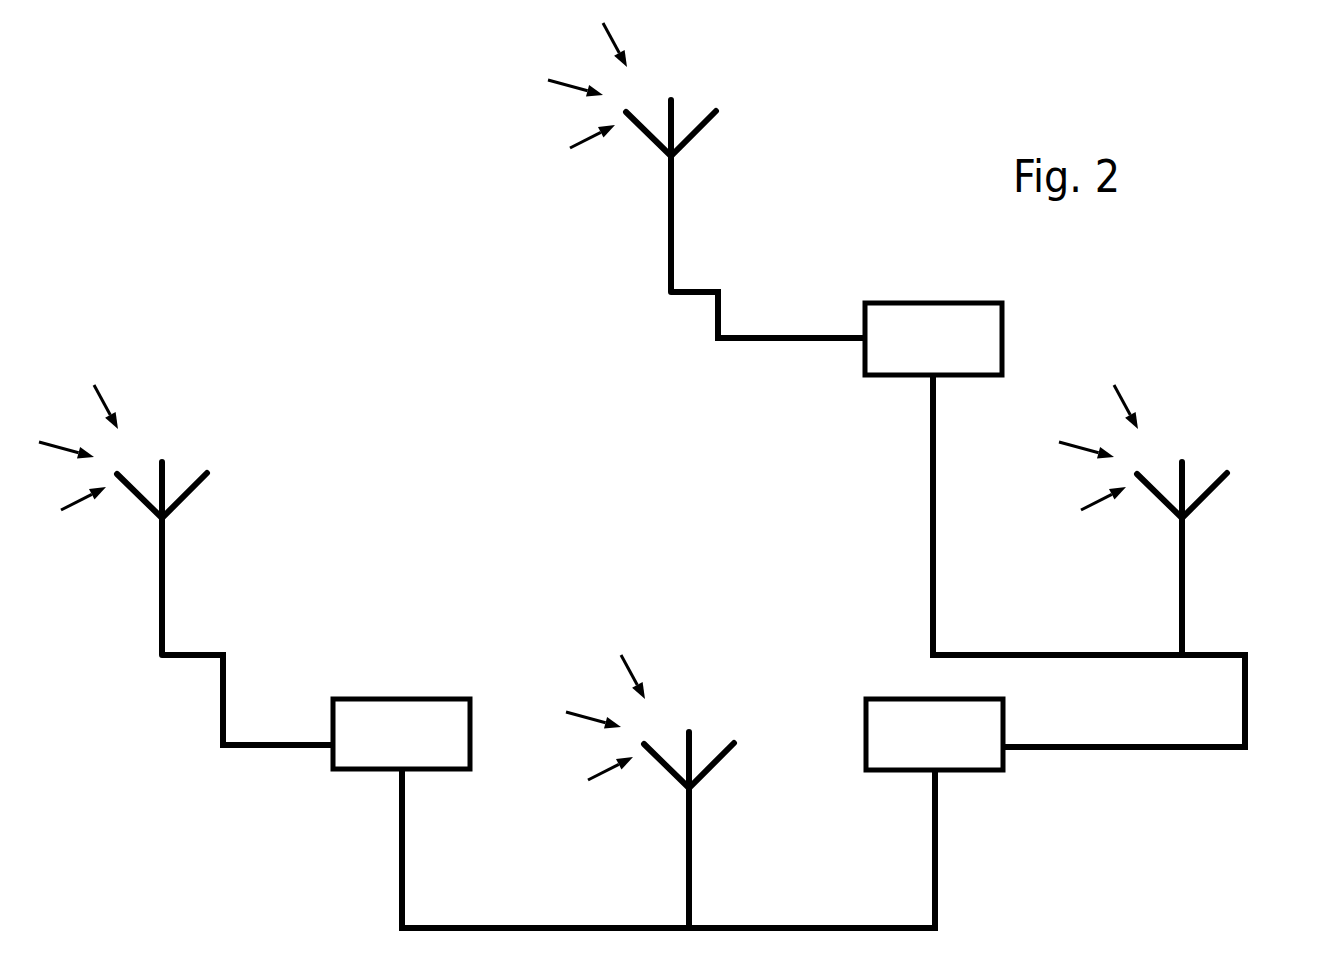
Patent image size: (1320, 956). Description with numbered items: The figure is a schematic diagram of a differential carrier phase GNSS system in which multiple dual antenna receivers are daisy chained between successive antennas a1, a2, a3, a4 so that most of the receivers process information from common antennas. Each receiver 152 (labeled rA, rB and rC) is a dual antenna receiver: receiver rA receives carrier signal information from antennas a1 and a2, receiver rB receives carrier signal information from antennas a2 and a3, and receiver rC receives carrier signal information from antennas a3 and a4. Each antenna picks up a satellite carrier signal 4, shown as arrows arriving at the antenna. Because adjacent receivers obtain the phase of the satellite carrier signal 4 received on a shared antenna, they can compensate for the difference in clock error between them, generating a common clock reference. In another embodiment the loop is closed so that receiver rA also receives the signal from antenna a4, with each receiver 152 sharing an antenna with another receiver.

The satellite carrier signal 4 is at (588, 401).
The receiver 152 is at (925, 303).
The antenna a1 is at (671, 190).
The antenna a2 is at (1182, 552).
The antenna a3 is at (689, 822).
The antenna a4 is at (162, 552).